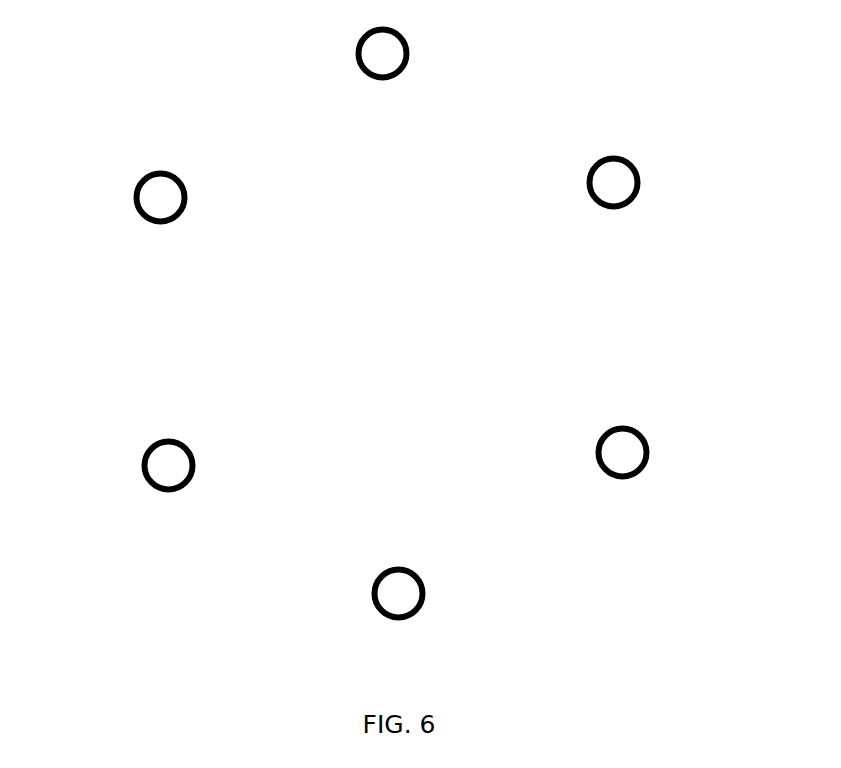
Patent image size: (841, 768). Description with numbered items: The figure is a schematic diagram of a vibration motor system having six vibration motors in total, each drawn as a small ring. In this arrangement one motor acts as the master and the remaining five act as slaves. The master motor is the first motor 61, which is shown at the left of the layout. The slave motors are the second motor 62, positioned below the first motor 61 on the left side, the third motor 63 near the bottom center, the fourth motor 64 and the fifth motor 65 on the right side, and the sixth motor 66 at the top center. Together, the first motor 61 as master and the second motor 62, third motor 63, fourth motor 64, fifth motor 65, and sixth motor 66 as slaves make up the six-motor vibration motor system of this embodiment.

The first motor 61 is at (134, 190).
The second motor 62 is at (142, 472).
The third motor 63 is at (374, 616).
The fourth motor 64 is at (647, 472).
The fifth motor 65 is at (647, 184).
The sixth motor 66 is at (374, 80).